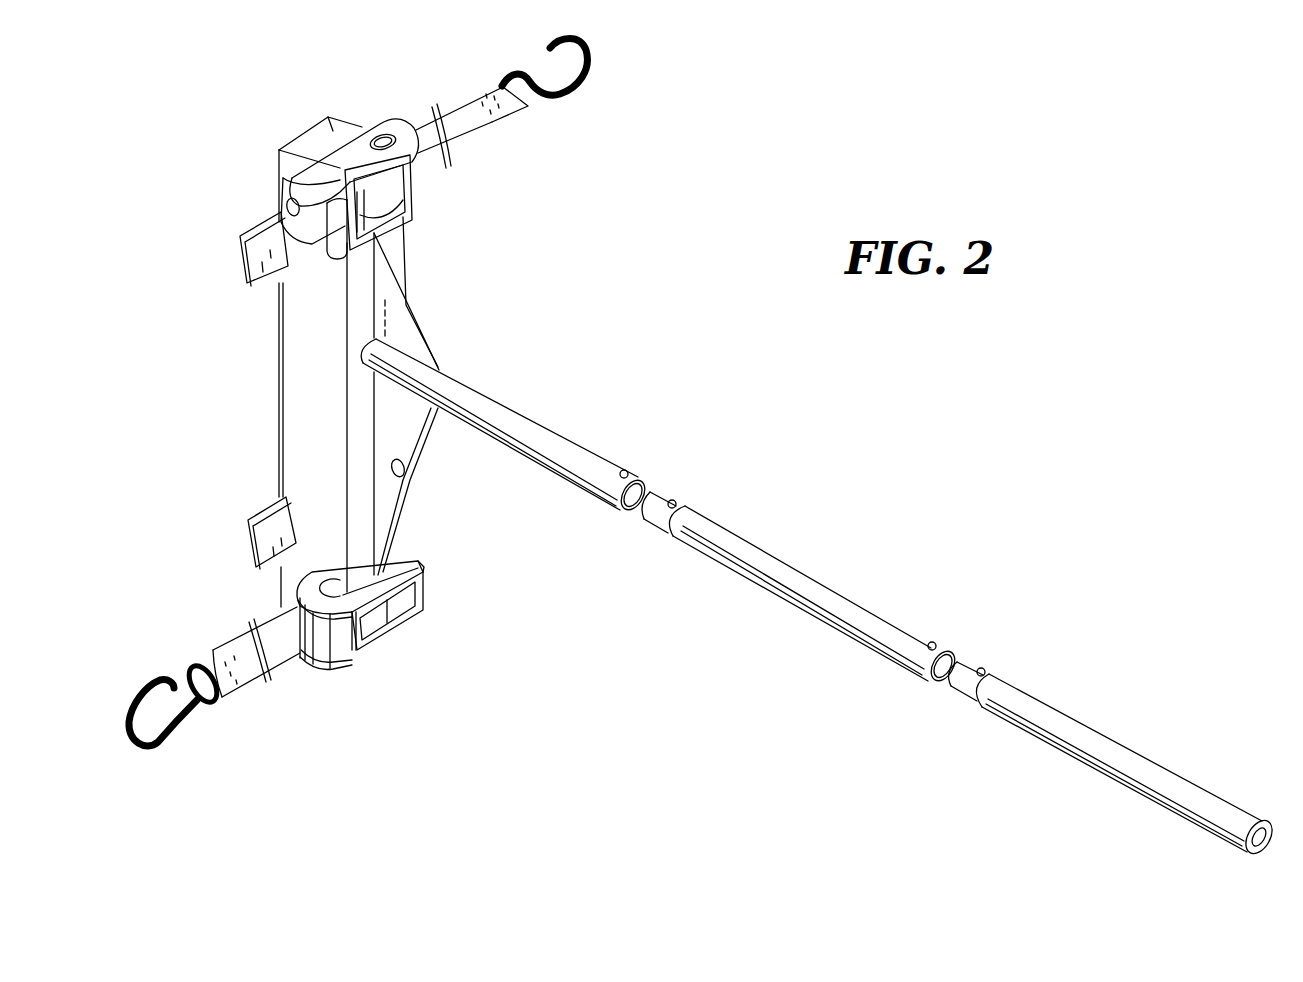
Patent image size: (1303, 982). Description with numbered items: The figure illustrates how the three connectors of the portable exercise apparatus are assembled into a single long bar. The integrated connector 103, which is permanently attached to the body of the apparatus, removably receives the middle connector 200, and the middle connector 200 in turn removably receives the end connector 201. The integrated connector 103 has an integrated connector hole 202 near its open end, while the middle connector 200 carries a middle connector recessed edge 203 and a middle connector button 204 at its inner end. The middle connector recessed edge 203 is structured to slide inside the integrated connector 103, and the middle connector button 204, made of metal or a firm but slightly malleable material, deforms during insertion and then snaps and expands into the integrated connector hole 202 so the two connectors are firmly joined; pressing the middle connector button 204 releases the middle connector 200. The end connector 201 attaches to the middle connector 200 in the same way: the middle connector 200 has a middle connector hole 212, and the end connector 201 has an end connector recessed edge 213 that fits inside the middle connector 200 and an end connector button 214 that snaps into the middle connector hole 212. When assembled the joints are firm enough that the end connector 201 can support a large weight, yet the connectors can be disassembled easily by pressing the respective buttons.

The integrated connector 103 is at (513, 412).
The middle connector 200 is at (790, 566).
The end connector 201 is at (1090, 733).
The integrated connector hole 202 is at (627, 471).
The middle connector recessed edge 203 is at (657, 520).
The middle connector button 204 is at (675, 501).
The middle connector hole 212 is at (935, 643).
The end connector recessed edge 213 is at (963, 690).
The end connector button 214 is at (984, 669).